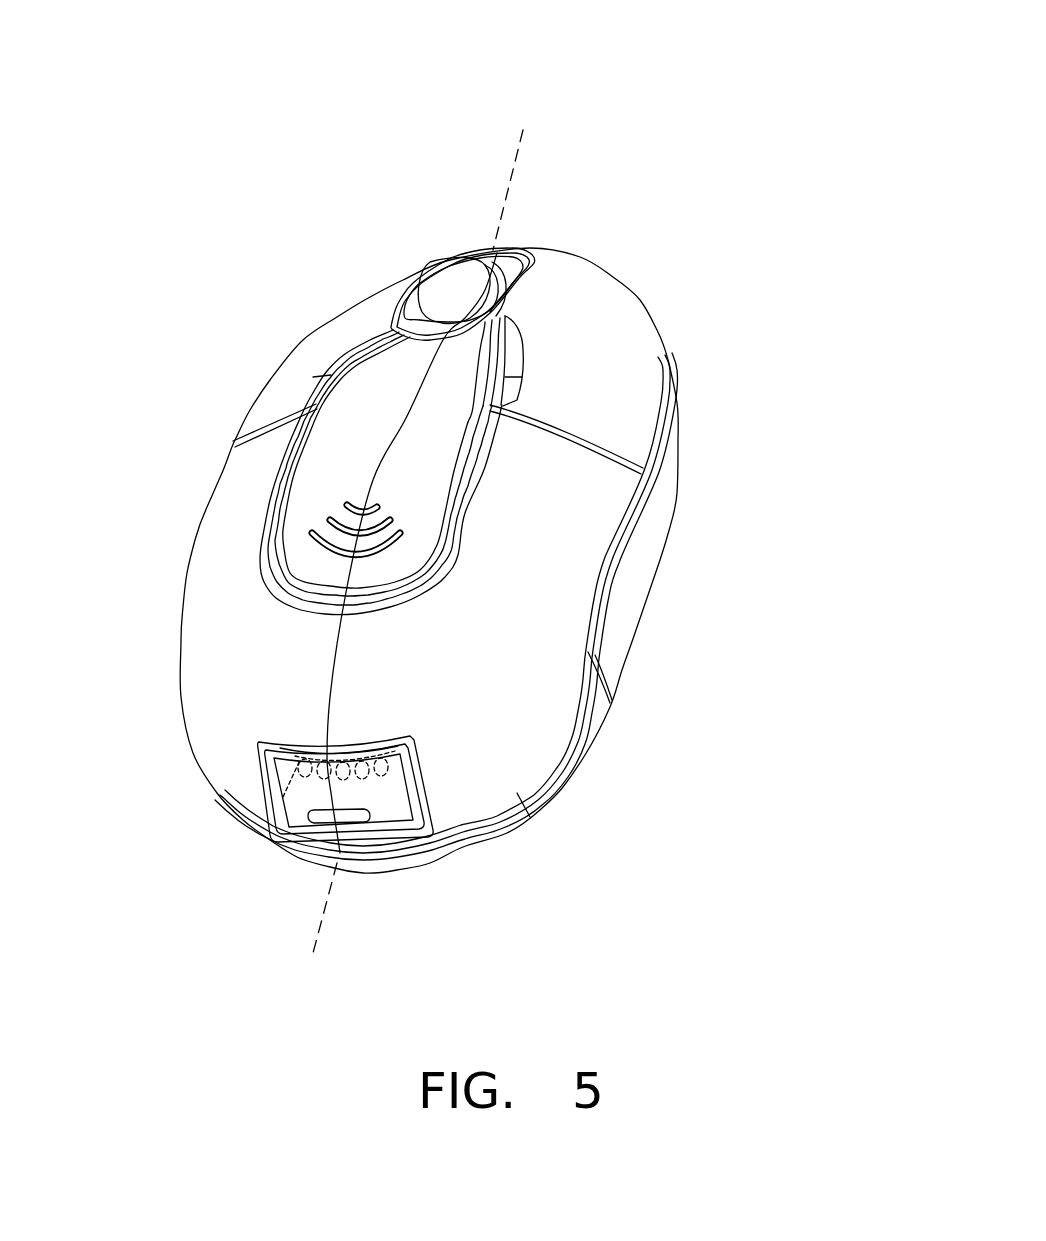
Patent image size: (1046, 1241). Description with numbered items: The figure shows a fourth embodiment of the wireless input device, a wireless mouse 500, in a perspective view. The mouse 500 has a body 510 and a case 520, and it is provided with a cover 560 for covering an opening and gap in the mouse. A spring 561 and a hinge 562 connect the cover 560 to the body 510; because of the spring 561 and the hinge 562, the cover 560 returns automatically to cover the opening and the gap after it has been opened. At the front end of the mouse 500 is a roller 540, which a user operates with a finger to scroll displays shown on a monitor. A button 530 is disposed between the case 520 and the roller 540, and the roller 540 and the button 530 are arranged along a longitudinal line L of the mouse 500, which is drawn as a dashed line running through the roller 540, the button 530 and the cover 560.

The wireless mouse 500 is at (694, 78).
The body 510 is at (677, 404).
The case 520 is at (203, 705).
The button 530 is at (370, 383).
The roller 540 is at (457, 277).
The cover 560 is at (390, 797).
The spring 561 is at (403, 708).
The hinge 562 is at (403, 755).